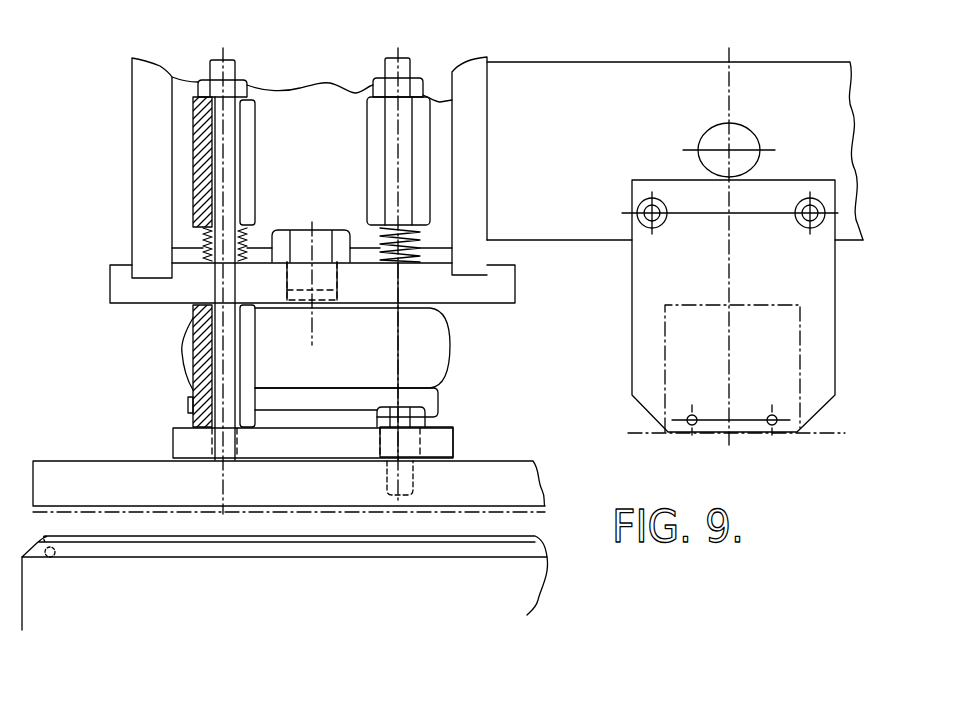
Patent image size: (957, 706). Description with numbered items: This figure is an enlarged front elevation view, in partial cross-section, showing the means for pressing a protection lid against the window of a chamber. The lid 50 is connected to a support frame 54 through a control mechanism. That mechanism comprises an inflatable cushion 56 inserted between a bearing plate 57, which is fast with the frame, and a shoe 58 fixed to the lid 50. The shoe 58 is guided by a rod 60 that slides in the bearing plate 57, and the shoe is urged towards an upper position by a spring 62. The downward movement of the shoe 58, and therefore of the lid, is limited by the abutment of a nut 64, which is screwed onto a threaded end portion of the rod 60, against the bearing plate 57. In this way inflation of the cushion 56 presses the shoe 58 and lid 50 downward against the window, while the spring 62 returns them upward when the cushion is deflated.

The lid 50 is at (63, 475).
The support frame 54 is at (592, 78).
The inflatable cushion 56 is at (188, 368).
The bearing plate 57 is at (120, 280).
The shoe 58 is at (180, 443).
The rod 60 is at (218, 342).
The spring 62 is at (415, 240).
The nut 64 is at (423, 150).